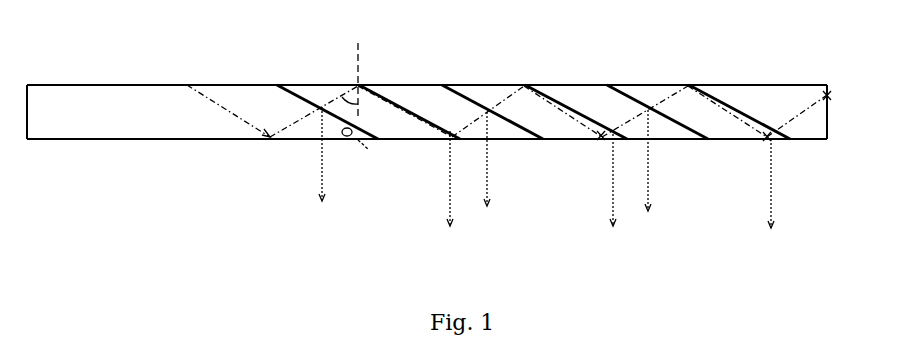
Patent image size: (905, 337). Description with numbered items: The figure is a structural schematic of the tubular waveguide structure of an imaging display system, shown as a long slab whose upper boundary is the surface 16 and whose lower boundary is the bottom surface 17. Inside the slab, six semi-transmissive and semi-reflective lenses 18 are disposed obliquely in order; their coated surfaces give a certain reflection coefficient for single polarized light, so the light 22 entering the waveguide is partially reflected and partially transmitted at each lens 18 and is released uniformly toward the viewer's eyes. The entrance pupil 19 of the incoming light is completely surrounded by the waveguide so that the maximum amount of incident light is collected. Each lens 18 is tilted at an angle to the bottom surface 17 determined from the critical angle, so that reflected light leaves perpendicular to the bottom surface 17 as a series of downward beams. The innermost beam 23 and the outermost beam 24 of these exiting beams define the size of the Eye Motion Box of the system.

The top surface of light guide plate 16 is at (787, 86).
The bottom surface 17 is at (800, 140).
The semi-transmissive and semi-reflective lens 18 is at (358, 140).
The entrance pupil 19 is at (221, 96).
The light 22 is at (345, 100).
The innermost beam 23 is at (322, 172).
The outermost beam 24 is at (769, 195).